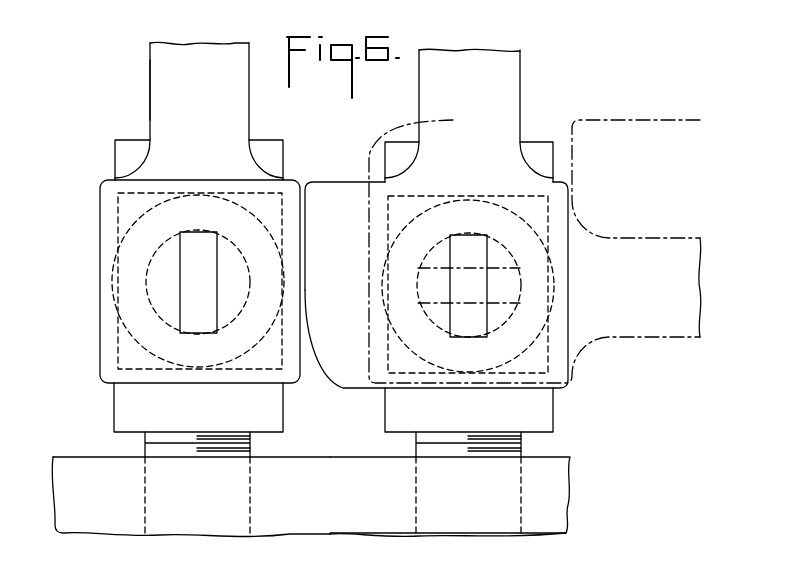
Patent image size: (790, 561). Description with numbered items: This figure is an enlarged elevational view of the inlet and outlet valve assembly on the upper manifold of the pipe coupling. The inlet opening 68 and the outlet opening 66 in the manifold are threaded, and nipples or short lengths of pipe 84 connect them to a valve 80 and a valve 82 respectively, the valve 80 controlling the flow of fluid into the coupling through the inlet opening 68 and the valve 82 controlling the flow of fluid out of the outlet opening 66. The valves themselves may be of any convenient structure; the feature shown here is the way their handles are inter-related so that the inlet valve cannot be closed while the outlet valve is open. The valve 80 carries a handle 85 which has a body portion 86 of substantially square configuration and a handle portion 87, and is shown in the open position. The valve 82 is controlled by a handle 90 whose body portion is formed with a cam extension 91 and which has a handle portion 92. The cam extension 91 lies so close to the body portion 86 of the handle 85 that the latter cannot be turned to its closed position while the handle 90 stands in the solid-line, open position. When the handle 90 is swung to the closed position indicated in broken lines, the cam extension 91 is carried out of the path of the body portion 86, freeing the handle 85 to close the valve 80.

The outlet opening 66 is at (437, 498).
The inlet opening 68 is at (157, 493).
The valve 80 is at (267, 150).
The valve 82 is at (542, 156).
The nipple 84 is at (250, 443).
The handle 85 is at (146, 92).
The body portion 86 is at (106, 223).
The handle portion 87 is at (203, 66).
The handle 90 is at (434, 165).
The cam extension 91 is at (327, 194).
The handle portion 92 is at (502, 82).